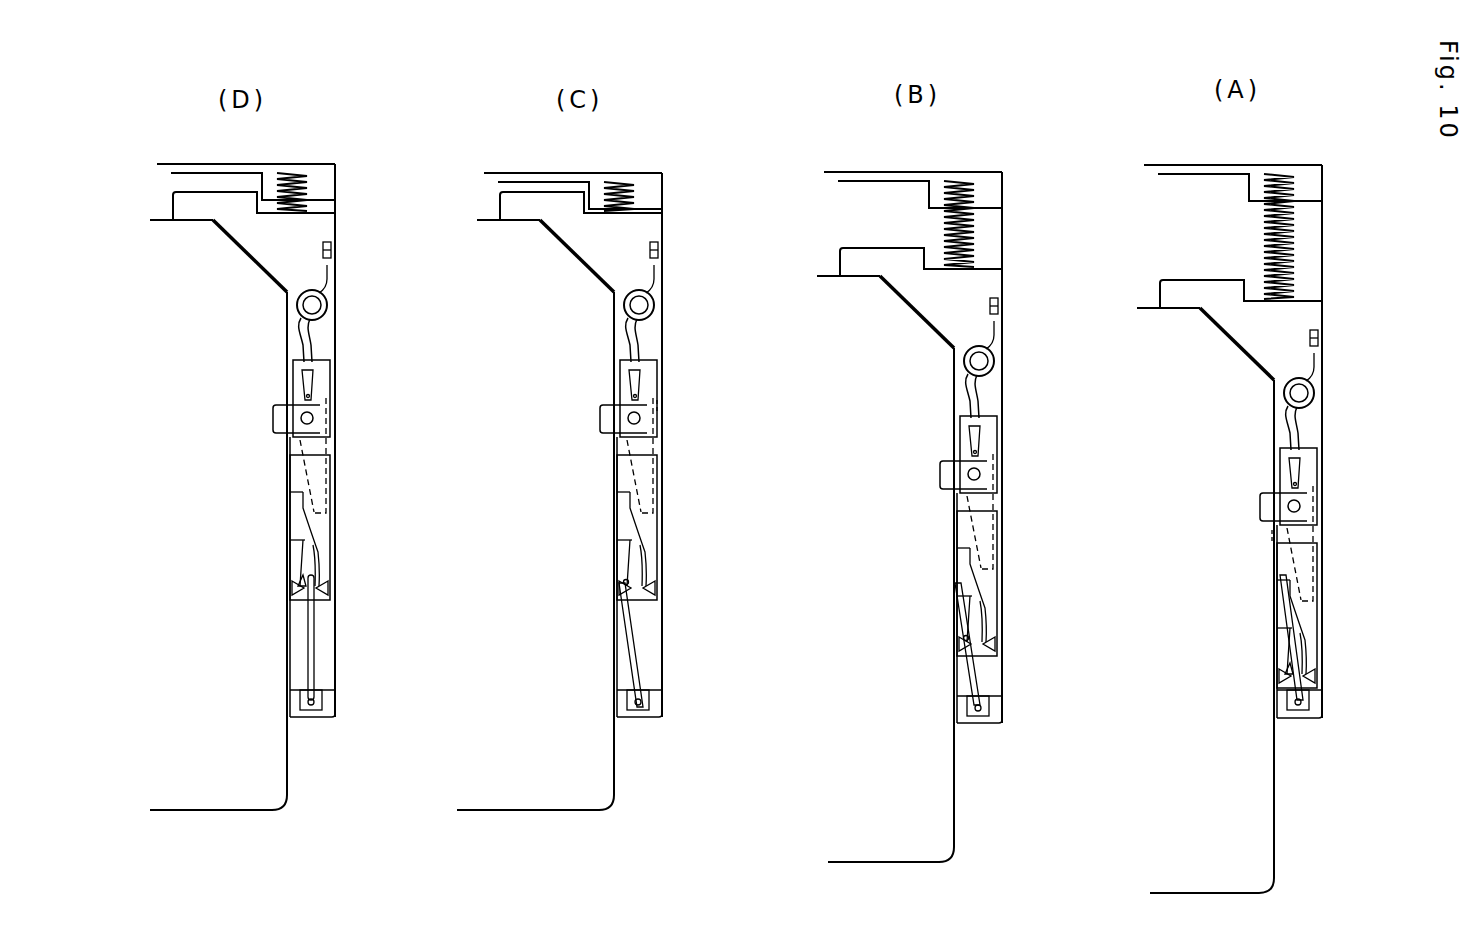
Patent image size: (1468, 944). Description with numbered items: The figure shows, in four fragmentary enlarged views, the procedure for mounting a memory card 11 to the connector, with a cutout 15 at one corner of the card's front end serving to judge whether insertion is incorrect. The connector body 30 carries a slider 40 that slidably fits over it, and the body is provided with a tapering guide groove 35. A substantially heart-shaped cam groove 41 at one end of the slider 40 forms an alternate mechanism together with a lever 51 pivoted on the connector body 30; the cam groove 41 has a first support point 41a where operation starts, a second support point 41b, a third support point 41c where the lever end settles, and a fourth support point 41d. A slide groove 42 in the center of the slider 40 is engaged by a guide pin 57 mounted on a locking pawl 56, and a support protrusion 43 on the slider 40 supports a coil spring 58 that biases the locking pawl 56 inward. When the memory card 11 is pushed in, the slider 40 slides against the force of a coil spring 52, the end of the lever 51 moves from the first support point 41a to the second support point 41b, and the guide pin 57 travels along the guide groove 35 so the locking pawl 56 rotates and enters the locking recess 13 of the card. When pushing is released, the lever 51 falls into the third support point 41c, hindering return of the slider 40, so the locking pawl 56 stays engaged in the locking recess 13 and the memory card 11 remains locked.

In FIG. 10D, the memory card 11 is at (238, 778).
In FIG. 10C, the memory card 11 is at (578, 775).
In FIG. 10B, the memory card 11 is at (925, 800).
In FIG. 10A, the memory card 11 is at (1255, 852).
In FIG. 10D, the locking recess 13 is at (274, 424).
In FIG. 10C, the locking recess 13 is at (603, 425).
In FIG. 10B, the locking recess 13 is at (940, 481).
In FIG. 10A, the locking recess 13 is at (1262, 512).
In FIG. 10D, the cutout 15 is at (250, 260).
In FIG. 10C, the cutout 15 is at (575, 258).
In FIG. 10B, the cutout 15 is at (905, 310).
In FIG. 10A, the cutout 15 is at (1228, 342).
In FIG. 10D, the connector body 30 is at (236, 165).
In FIG. 10C, the connector body 30 is at (565, 172).
In FIG. 10B, the connector body 30 is at (890, 172).
In FIG. 10A, the connector body 30 is at (1222, 165).
In FIG. 10D, the tapering guide groove 35 is at (284, 467).
In FIG. 10C, the tapering guide groove 35 is at (610, 465).
In FIG. 10B, the tapering guide groove 35 is at (1002, 440).
In FIG. 10A, the tapering guide groove 35 is at (1272, 416).
In FIG. 10D, the slider 40 is at (316, 238).
In FIG. 10C, the slider 40 is at (642, 228).
In FIG. 10B, the slider 40 is at (980, 283).
In FIG. 10A, the slider 40 is at (1298, 315).
In FIG. 10D, the cam groove 41 is at (295, 551).
In FIG. 10C, the cam groove 41 is at (622, 556).
In FIG. 10B, the cam groove 41 is at (977, 583).
In FIG. 10A, the cam groove 41 is at (1288, 641).
In FIG. 10D, the first support point 41a is at (298, 496).
In FIG. 10C, the first support point 41a is at (626, 497).
In FIG. 10B, the first support point 41a is at (962, 550).
In FIG. 10D, the second support point 41b is at (298, 593).
In FIG. 10A, the second support point 41b is at (1275, 686).
In FIG. 10C, the third support point 41c is at (628, 578).
In FIG. 10B, the third support point 41c is at (978, 640).
In FIG. 10D, the fourth support point 41d is at (326, 589).
In FIG. 10C, the fourth support point 41d is at (652, 589).
In FIG. 10B, the fourth support point 41d is at (988, 648).
In FIG. 10A, the fourth support point 41d is at (1318, 673).
In FIG. 10C, the slide groove 42 is at (660, 408).
In FIG. 10A, the slide groove 42 is at (1270, 537).
In FIG. 10D, the support protrusion 43 is at (315, 305).
In FIG. 10C, the support protrusion 43 is at (642, 305).
In FIG. 10B, the support protrusion 43 is at (982, 360).
In FIG. 10A, the support protrusion 43 is at (1302, 392).
In FIG. 10D, the lever 51 is at (312, 652).
In FIG. 10C, the lever 51 is at (632, 658).
In FIG. 10B, the lever 51 is at (968, 660).
In FIG. 10A, the lever 51 is at (1290, 610).
In FIG. 10D, the coil spring 52 is at (300, 187).
In FIG. 10C, the coil spring 52 is at (632, 185).
In FIG. 10B, the coil spring 52 is at (972, 220).
In FIG. 10A, the coil spring 52 is at (1290, 228).
In FIG. 10D, the locking pawl 56 is at (288, 410).
In FIG. 10C, the locking pawl 56 is at (615, 412).
In FIG. 10B, the locking pawl 56 is at (948, 465).
In FIG. 10A, the locking pawl 56 is at (1283, 497).
In FIG. 10D, the guide pin 57 is at (309, 419).
In FIG. 10C, the guide pin 57 is at (636, 419).
In FIG. 10B, the guide pin 57 is at (985, 478).
In FIG. 10A, the guide pin 57 is at (1313, 505).
In FIG. 10D, the coil spring 58 is at (310, 342).
In FIG. 10C, the coil spring 58 is at (642, 345).
In FIG. 10B, the coil spring 58 is at (982, 396).
In FIG. 10A, the coil spring 58 is at (1307, 425).